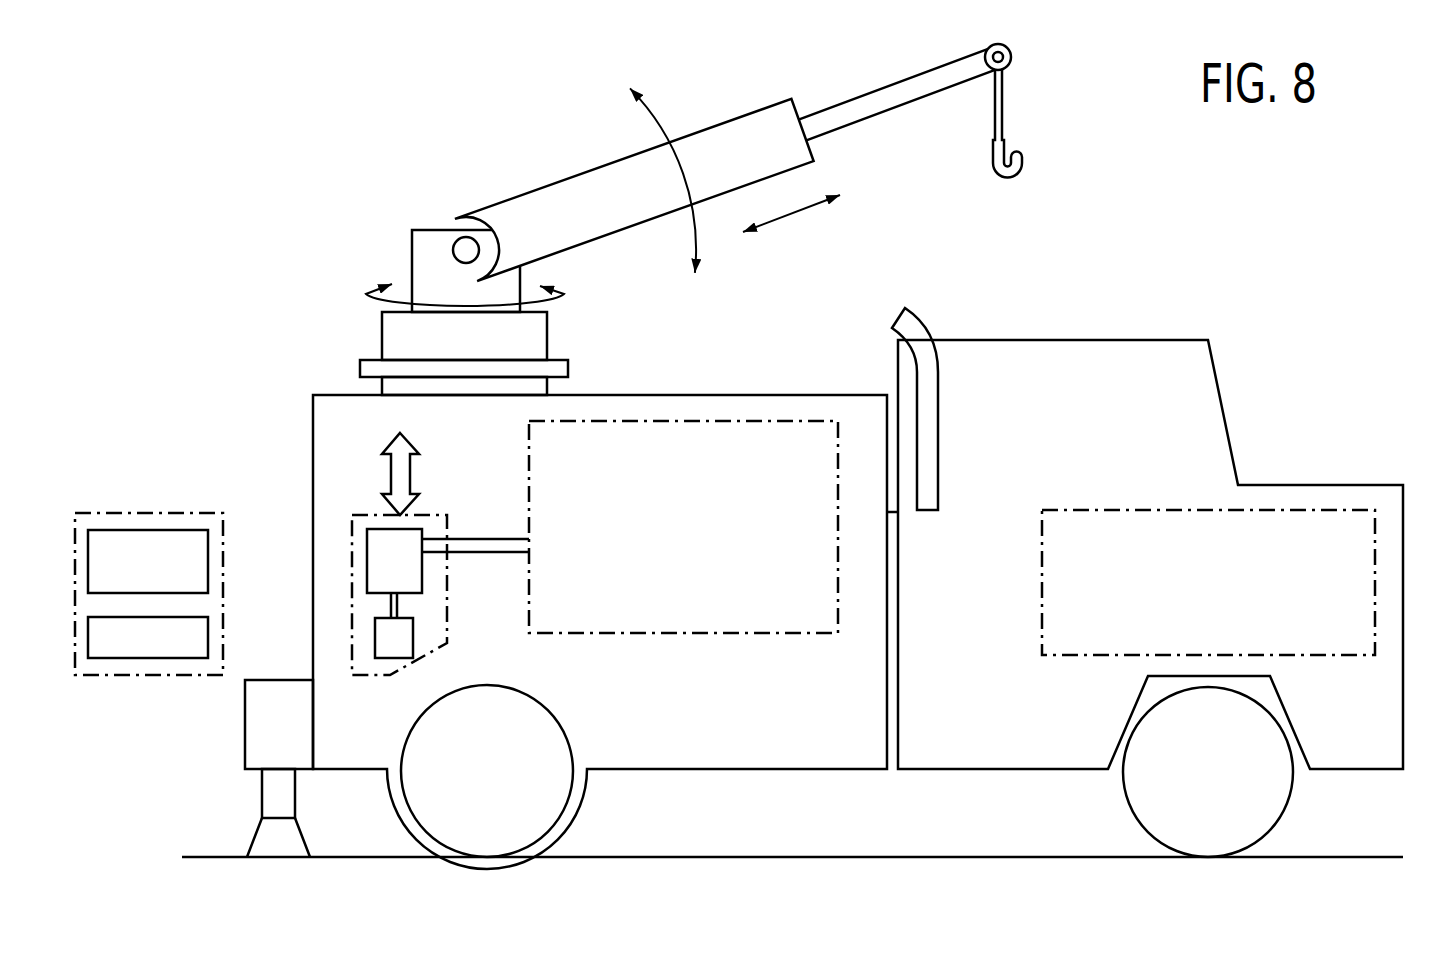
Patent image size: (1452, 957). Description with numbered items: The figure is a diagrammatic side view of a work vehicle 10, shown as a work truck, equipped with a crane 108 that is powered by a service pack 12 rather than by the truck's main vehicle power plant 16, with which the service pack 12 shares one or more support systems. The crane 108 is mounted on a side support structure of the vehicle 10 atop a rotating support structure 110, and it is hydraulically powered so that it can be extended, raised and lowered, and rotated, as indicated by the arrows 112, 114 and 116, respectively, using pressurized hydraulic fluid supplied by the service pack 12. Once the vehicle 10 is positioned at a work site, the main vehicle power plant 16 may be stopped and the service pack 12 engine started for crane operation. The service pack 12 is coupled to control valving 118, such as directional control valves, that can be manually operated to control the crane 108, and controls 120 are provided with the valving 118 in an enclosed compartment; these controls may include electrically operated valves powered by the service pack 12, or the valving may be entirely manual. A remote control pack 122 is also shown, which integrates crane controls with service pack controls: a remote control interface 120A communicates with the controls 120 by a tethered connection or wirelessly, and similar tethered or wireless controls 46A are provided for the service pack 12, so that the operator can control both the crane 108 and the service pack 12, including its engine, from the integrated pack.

The work vehicle 10 is at (1250, 422).
The service pack 12 is at (697, 527).
The main vehicle power plant 16 is at (1217, 593).
The tethered or wireless controls for the service pack 46A is at (180, 658).
The crane 108 is at (475, 148).
The rotating support structure 110 is at (381, 335).
The arrow indicating extension 112 is at (793, 215).
The arrow indicating raising and lowering 114 is at (697, 230).
The arrow indicating rotation 116 is at (566, 296).
The control valving 118 is at (374, 551).
The controls 120 is at (376, 634).
The remote control interface 120A is at (122, 530).
The remote control pack 122 is at (90, 513).